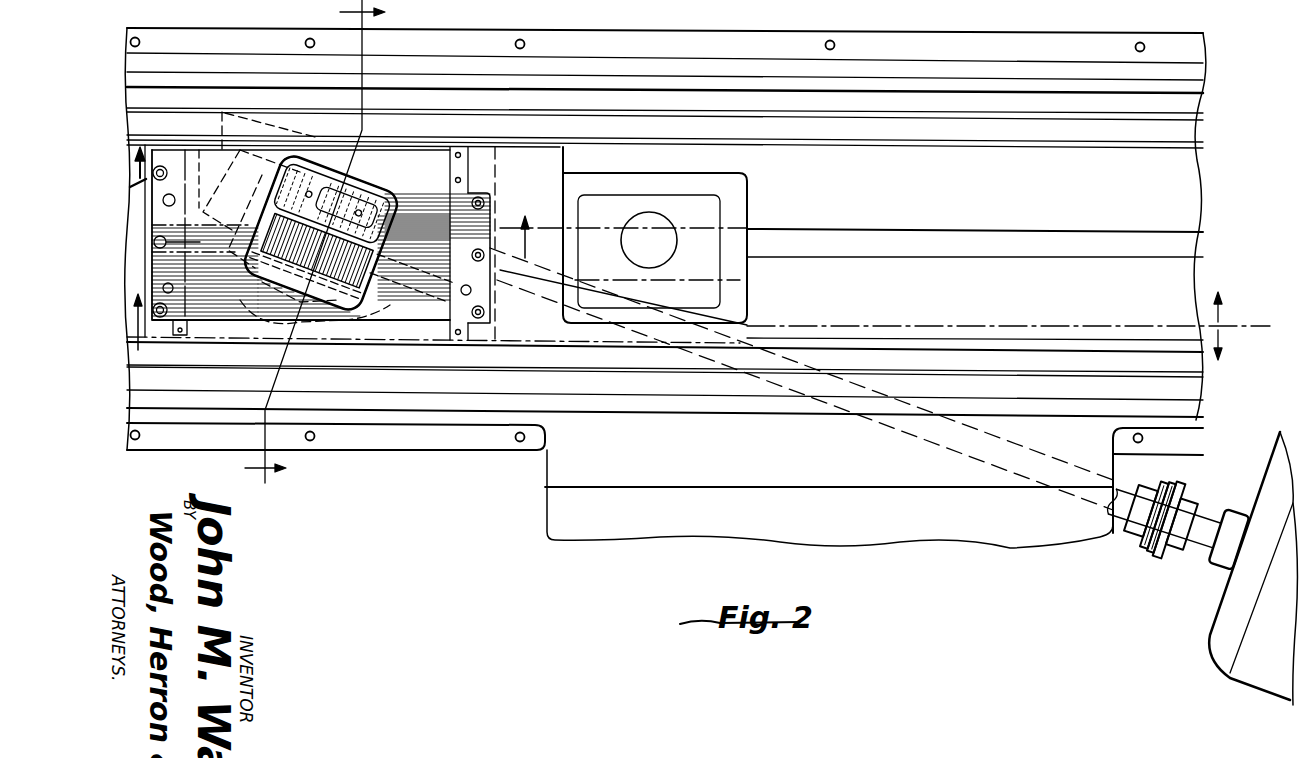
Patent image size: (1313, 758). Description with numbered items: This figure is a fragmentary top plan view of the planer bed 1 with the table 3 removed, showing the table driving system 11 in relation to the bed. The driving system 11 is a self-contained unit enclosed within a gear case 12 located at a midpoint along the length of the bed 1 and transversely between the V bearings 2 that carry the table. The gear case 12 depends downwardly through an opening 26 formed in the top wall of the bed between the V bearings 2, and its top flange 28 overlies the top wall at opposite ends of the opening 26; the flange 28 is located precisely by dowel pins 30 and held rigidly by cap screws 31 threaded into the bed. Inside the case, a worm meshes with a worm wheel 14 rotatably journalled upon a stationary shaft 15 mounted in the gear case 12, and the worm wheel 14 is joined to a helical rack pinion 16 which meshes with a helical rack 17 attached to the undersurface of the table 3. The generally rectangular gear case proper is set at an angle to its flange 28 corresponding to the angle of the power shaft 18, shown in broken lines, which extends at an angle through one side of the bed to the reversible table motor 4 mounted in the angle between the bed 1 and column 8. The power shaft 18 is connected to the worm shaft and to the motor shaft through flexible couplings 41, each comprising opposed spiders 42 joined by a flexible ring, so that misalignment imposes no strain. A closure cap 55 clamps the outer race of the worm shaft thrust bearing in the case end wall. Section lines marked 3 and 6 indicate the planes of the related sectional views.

The bed 1 is at (478, 437).
The V bearings 2 is at (625, 70).
The table 3 is at (329, 244).
The reversible table motor 4 is at (1215, 645).
The section line 6- 6 is at (688, 260).
The column 8 is at (572, 526).
The table driving system 11 is at (333, 294).
The gear case 12 is at (419, 177).
The worm wheel 14 is at (390, 195).
The stationary shaft 15 is at (425, 253).
The helical rack pinion 16 is at (382, 294).
The helical rack 17 is at (700, 228).
The power shaft 18 is at (888, 432).
The opening 26 is at (205, 142).
The top flange 28 is at (198, 305).
The dowel pins 30 is at (495, 240).
The cap screws 31 is at (486, 200).
The flexible coupling 41 is at (1192, 491).
The spiders 42 is at (1170, 550).
The closure cap 55 is at (228, 115).